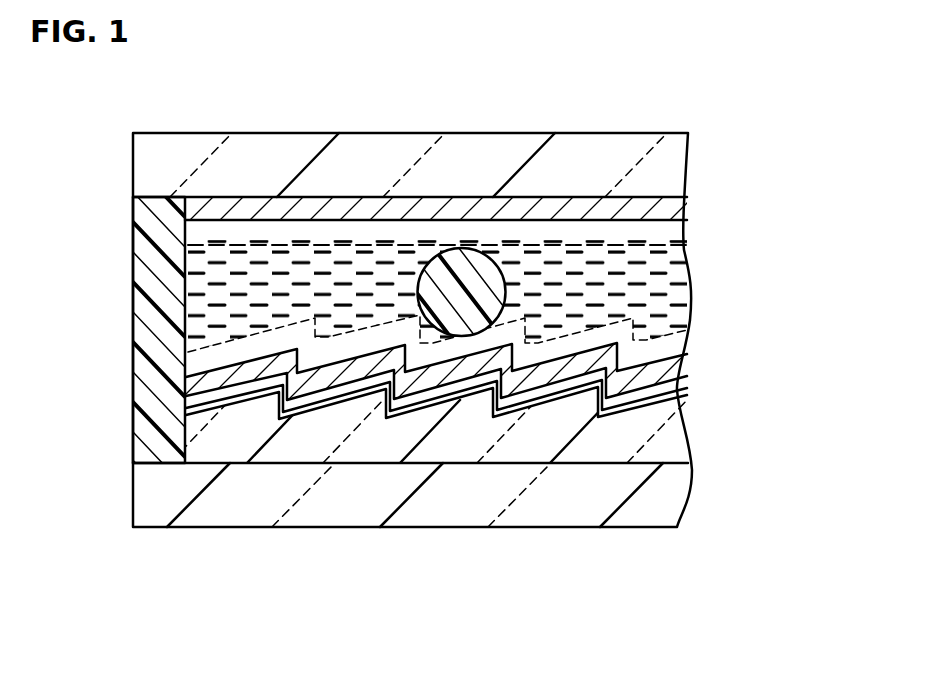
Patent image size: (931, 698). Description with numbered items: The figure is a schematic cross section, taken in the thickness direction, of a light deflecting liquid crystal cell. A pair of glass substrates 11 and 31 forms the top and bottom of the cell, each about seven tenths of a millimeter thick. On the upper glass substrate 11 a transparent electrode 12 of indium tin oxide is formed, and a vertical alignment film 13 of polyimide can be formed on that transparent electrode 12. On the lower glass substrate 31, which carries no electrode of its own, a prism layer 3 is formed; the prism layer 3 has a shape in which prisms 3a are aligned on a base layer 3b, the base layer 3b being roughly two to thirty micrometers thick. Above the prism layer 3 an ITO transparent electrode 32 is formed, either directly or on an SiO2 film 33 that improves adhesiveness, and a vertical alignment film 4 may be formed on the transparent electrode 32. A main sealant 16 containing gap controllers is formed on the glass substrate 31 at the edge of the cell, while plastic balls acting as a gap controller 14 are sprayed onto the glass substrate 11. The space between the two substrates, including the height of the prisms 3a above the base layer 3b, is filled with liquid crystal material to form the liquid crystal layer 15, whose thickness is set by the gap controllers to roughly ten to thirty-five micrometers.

The glass substrate 11 is at (675, 158).
The transparent electrode 12 is at (673, 212).
The vertical alignment film 13 is at (668, 238).
The gap controller 14 is at (503, 268).
The liquid crystal layer 15 is at (676, 300).
The main sealant 16 is at (131, 315).
The vertical alignment film 4 is at (672, 341).
The transparent electrode 32 is at (672, 372).
The SiO2 film 33 is at (672, 384).
The prism 3a is at (672, 400).
The base layer 3b is at (675, 462).
The prism layer 3 is at (461, 438).
The glass substrate 31 is at (672, 500).